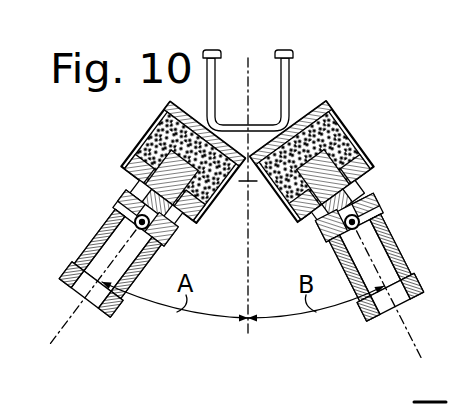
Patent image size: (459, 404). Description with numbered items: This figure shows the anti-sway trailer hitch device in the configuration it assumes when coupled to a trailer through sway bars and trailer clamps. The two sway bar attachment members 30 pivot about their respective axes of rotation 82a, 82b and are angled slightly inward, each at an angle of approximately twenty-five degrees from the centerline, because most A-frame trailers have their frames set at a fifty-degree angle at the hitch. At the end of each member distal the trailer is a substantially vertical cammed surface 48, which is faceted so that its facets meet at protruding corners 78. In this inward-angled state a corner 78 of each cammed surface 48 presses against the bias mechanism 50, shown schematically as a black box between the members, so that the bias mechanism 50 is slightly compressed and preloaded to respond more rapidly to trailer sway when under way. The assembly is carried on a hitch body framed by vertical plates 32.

The sway bar attachment member 30 is at (92, 243).
The vertical plates 32 is at (293, 76).
The cammed surface 48 is at (127, 189).
The bias mechanism 50 is at (332, 128).
The corners 78 is at (178, 223).
The axis of rotation 82a is at (122, 203).
The axis of rotation 82b is at (364, 228).